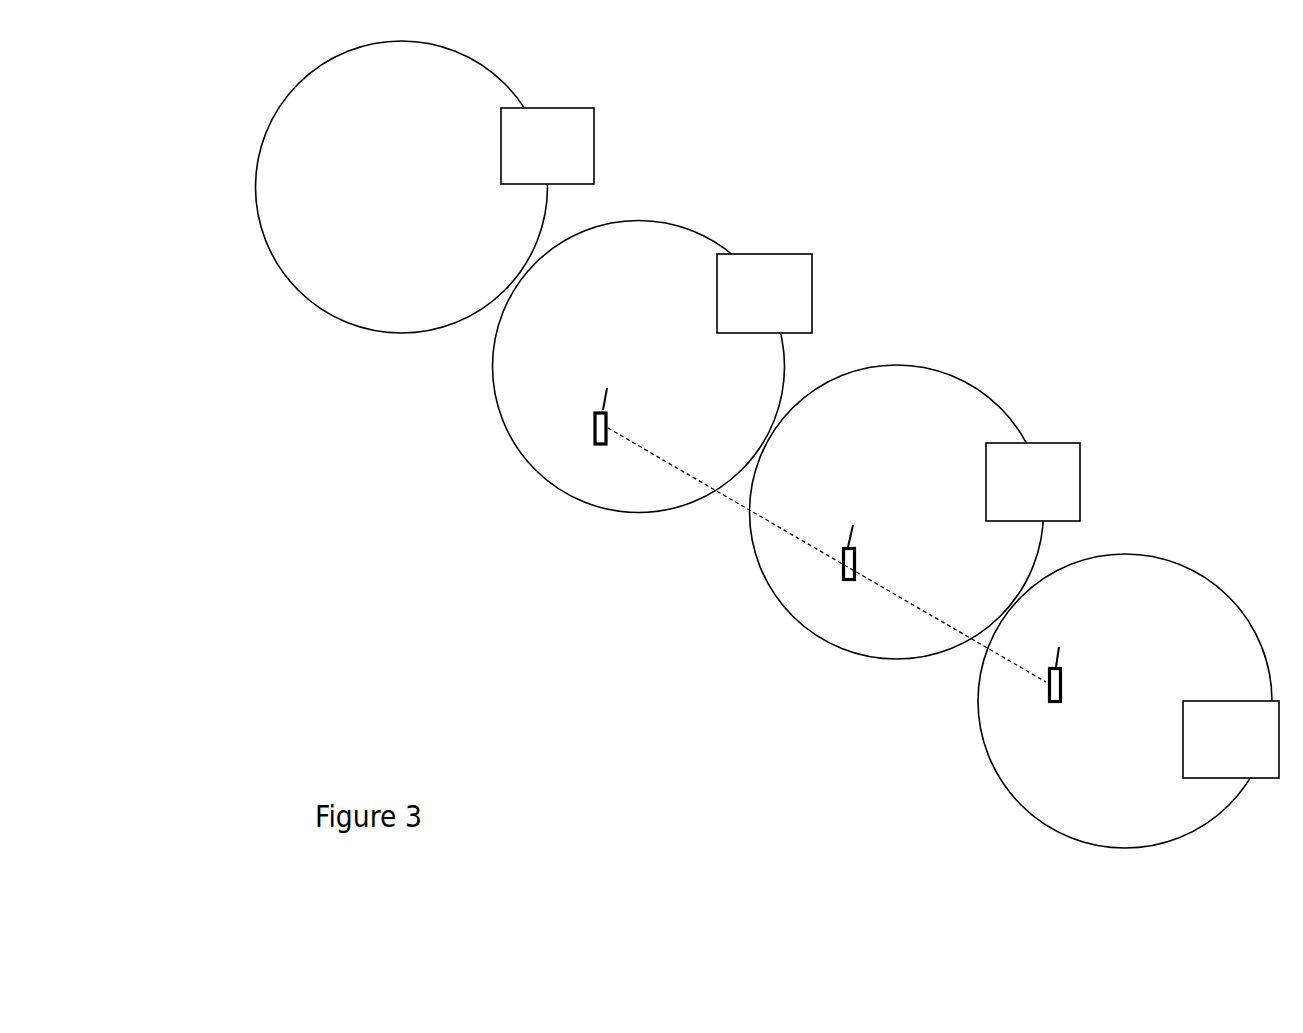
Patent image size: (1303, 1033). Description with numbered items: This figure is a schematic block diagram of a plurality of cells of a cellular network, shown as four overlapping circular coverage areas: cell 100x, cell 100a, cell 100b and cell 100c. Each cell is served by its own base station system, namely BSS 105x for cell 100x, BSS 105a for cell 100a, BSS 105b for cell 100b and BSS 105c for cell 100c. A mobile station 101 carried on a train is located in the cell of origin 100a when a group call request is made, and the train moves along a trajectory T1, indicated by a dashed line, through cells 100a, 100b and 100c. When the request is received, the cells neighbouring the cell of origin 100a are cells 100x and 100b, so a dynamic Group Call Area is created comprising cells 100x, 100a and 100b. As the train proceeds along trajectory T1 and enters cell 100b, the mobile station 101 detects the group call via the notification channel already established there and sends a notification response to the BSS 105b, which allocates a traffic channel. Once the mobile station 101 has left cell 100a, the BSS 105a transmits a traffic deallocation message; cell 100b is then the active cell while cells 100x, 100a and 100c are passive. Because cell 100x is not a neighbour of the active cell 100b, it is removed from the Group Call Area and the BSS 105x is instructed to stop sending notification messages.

The cell 100x is at (402, 187).
The cell 100a is at (639, 367).
The cell 100b is at (897, 512).
The cell 100c is at (1125, 701).
The base station system 105x is at (547, 146).
The base station system 105a is at (764, 293).
The base station system 105b is at (1033, 482).
The base station system 105c is at (1231, 739).
The mobile station 101 is at (594, 428).
The trajectory T1 is at (706, 465).